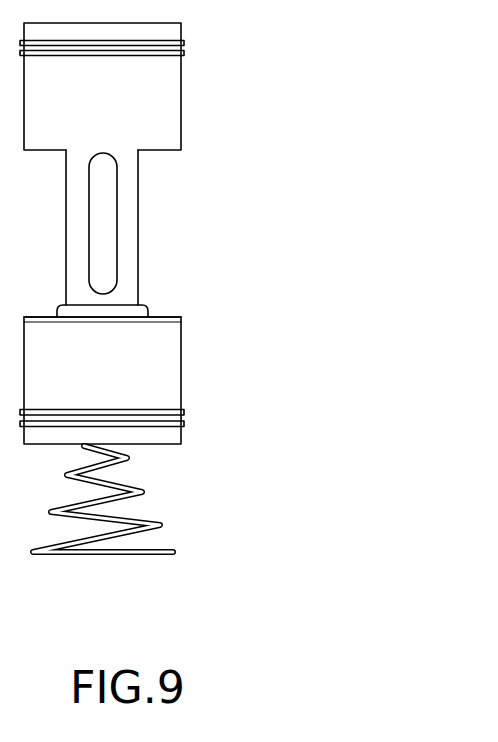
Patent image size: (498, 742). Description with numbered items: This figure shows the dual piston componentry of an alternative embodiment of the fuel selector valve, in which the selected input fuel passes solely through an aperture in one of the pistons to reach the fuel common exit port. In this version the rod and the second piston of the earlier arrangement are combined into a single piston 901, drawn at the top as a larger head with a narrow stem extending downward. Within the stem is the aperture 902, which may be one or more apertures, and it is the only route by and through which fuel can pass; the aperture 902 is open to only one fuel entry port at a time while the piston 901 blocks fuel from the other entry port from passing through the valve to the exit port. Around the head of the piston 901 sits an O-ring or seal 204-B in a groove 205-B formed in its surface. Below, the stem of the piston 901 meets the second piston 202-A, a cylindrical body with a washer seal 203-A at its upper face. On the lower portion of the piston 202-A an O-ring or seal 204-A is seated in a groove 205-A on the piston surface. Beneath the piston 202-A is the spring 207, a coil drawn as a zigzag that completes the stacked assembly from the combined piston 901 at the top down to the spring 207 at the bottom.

The piston 901 is at (134, 170).
The aperture 902 is at (102, 232).
The O-ring or seal 204-B is at (204, 40).
The groove 205-B is at (102, 53).
The piston 202-A is at (137, 380).
The washer seal 203-A is at (181, 317).
The O-ring or seal 204-A is at (206, 412).
The groove 205-A is at (102, 424).
The spring 207 is at (148, 490).